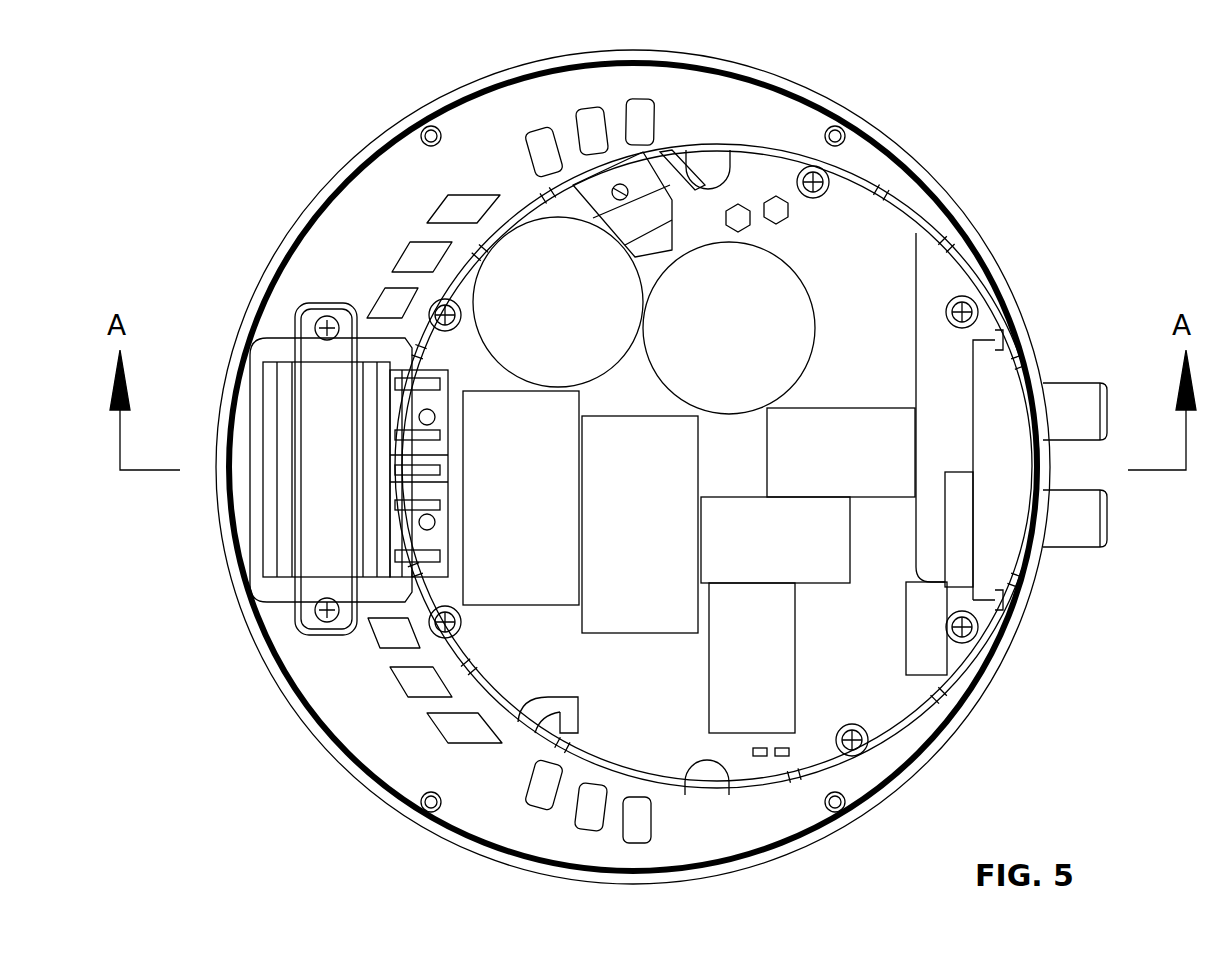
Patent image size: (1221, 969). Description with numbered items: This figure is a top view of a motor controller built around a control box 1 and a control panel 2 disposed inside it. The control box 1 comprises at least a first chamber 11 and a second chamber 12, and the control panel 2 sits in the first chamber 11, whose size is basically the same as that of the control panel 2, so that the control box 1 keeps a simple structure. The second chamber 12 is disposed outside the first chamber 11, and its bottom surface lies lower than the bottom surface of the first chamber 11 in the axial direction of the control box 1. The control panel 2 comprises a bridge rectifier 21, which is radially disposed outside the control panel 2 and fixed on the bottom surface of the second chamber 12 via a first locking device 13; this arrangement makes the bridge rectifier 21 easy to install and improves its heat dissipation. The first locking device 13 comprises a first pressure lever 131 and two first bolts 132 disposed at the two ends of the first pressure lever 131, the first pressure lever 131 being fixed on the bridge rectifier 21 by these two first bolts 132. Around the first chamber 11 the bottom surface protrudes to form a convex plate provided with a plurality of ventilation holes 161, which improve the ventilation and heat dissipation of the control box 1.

The control box 1 is at (370, 240).
The first chamber 11 is at (708, 168).
The second chamber 12 is at (257, 467).
The first locking device 13 is at (152, 592).
The first pressure lever 131 is at (320, 507).
The first bolt 132 is at (320, 617).
The ventilation hole 161 is at (588, 123).
The control panel 2 is at (845, 278).
The bridge rectifier 21 is at (285, 385).